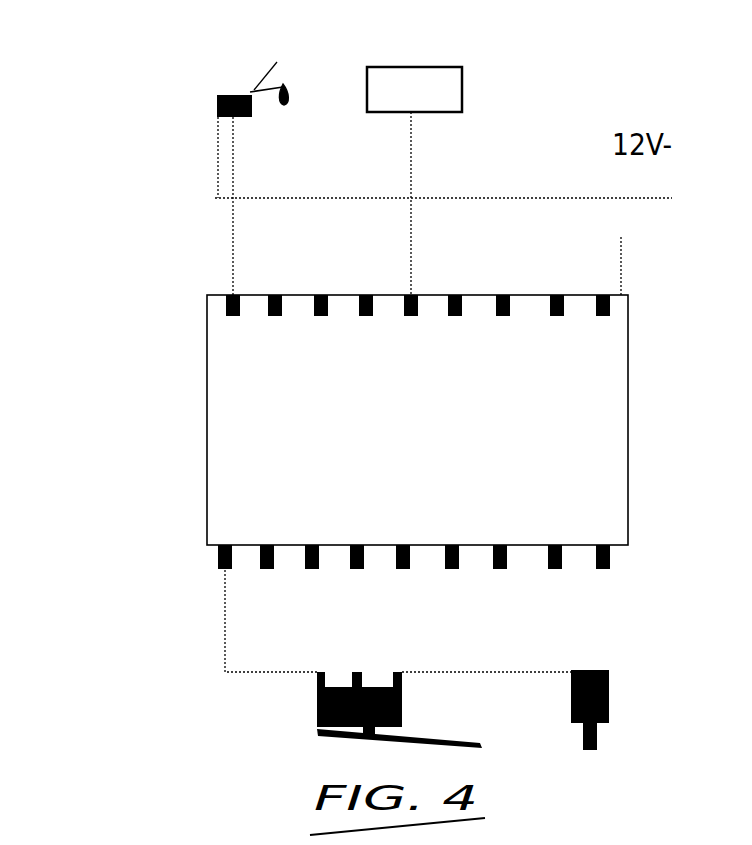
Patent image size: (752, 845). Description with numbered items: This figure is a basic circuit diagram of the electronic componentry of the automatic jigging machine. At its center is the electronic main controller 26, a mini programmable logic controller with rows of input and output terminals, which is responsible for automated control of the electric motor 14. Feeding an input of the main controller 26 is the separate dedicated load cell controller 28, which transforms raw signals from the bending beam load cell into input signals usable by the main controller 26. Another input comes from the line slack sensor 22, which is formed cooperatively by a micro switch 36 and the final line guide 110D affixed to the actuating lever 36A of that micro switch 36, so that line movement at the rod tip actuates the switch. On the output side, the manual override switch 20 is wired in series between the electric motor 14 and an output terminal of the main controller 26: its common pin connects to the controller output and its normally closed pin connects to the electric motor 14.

The electric motor 14 is at (619, 698).
The manual override switch 20 is at (308, 718).
The line slack sensor 22 is at (258, 162).
The electronic main controller 26 is at (548, 428).
The load cell controller 28 is at (447, 103).
The micro switch 36 is at (220, 106).
The actuating lever 36A is at (282, 62).
The final line guide 110D is at (287, 85).